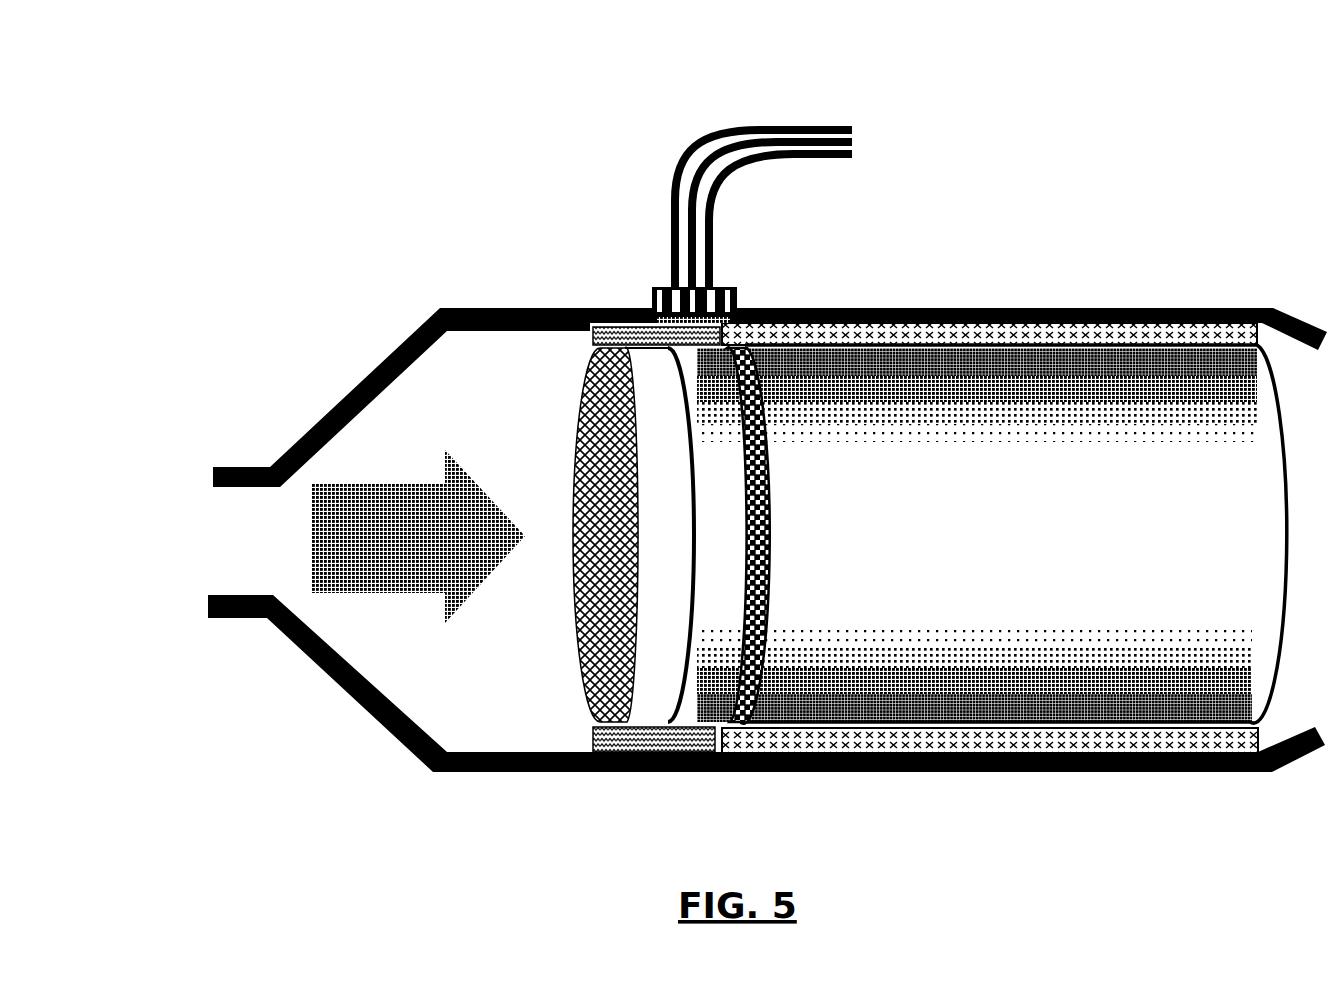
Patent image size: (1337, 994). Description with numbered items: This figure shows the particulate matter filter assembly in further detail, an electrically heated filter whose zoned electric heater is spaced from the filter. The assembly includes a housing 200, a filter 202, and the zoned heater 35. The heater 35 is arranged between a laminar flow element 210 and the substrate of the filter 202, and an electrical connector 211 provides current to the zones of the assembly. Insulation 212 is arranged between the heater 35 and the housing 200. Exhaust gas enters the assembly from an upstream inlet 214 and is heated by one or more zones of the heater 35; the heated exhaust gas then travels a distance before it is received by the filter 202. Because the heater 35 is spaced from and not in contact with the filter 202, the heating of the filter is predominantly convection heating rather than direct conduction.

The housing 200 is at (975, 305).
The filter 202 is at (956, 534).
The zoned heater 35 is at (603, 485).
The laminar flow element 210 is at (637, 360).
The electrical connector 211 is at (990, 127).
The insulation 212 is at (593, 339).
The upstream inlet 214 is at (218, 542).